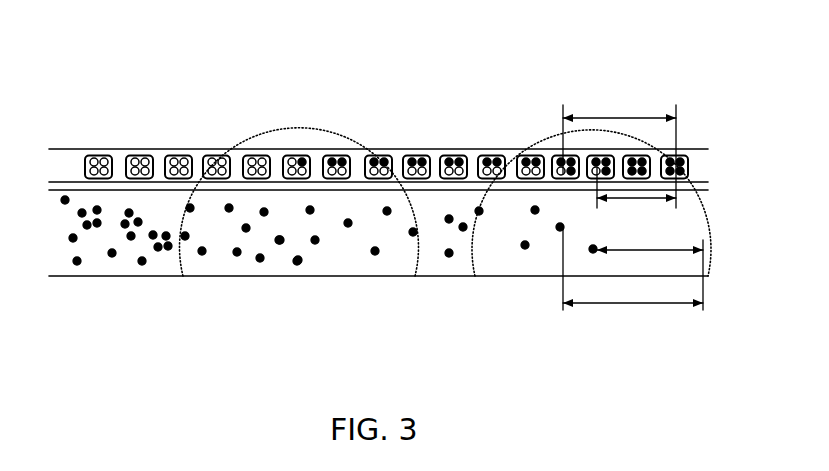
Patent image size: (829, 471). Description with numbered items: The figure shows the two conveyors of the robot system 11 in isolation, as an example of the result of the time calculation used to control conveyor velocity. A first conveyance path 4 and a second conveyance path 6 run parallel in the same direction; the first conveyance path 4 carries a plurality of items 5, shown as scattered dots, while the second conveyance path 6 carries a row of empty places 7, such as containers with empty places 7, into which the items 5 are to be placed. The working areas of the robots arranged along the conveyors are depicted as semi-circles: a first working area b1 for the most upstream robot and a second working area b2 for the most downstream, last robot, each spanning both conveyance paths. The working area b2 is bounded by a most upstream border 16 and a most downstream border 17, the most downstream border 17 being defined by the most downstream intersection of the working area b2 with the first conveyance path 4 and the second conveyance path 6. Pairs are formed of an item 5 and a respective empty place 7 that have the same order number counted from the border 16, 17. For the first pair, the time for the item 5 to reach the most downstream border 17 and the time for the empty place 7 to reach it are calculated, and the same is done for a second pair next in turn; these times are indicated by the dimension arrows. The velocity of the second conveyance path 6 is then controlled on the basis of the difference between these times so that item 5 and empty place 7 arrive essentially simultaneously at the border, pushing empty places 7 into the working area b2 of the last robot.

The first conveyance path 4 is at (212, 277).
The item 5 is at (235, 251).
The second conveyance path 6 is at (443, 150).
The empty place 7 is at (208, 153).
The robot system 11 is at (193, 83).
The most upstream border 16 is at (466, 263).
The most downstream border 17 is at (712, 219).
The first working area b1 is at (284, 128).
The second working area b2 is at (535, 148).